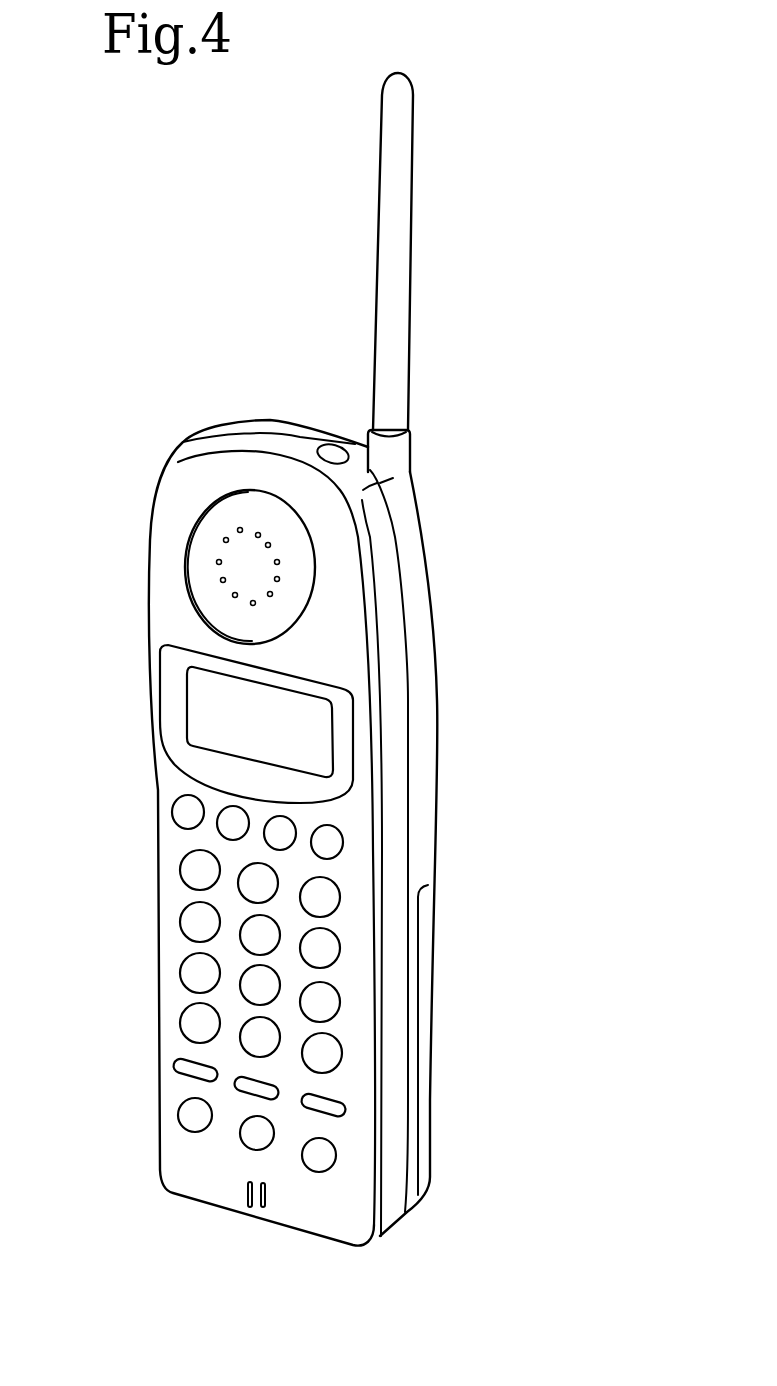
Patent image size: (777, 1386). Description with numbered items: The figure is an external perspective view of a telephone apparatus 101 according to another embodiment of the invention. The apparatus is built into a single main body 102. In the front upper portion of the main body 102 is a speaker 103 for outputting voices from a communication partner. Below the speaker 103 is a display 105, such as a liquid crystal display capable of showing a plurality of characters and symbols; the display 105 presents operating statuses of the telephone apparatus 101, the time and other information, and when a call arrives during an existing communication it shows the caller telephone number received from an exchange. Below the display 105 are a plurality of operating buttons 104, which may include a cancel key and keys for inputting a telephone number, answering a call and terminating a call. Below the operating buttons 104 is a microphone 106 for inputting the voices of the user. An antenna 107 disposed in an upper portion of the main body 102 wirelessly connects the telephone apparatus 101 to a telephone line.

The telephone apparatus 101 is at (562, 387).
The main body 102 is at (415, 695).
The speaker 103 is at (210, 572).
The operating buttons 104 is at (187, 862).
The display 105 is at (193, 708).
The microphone 106 is at (245, 1195).
The antenna 107 is at (402, 255).